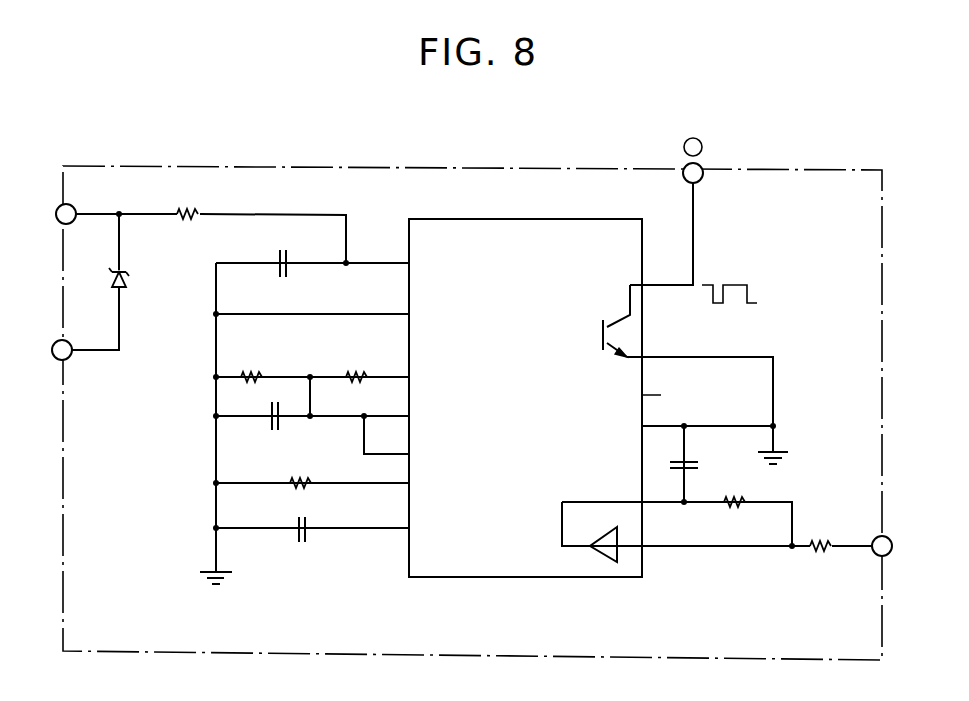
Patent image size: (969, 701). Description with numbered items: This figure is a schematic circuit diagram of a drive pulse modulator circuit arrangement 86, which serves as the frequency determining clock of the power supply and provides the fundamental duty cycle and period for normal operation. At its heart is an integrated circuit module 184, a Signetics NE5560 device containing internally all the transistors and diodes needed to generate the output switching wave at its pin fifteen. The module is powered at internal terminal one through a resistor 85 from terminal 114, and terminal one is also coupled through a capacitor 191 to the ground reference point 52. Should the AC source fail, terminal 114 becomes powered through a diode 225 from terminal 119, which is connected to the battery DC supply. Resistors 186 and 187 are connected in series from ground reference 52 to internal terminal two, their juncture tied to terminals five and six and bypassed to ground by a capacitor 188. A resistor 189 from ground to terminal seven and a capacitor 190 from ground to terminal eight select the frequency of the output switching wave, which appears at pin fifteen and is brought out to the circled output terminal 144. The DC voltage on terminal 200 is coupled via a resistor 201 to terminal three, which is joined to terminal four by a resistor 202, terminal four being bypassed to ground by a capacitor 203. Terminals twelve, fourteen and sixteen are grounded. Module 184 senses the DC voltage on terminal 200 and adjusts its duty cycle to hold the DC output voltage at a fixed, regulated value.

The drive pulse modulator circuit arrangement 86 is at (600, 170).
The integrated circuit module 184 is at (508, 233).
The terminal 114 is at (58, 222).
The terminal 119 is at (52, 362).
The resistor 85 is at (188, 209).
The diode 225 is at (126, 281).
The capacitor 191 is at (280, 256).
The resistor 186 is at (252, 368).
The resistor 187 is at (357, 368).
The capacitor 188 is at (270, 427).
The resistor 189 is at (302, 474).
The capacitor 190 is at (310, 520).
The ground reference point 52 is at (234, 574).
The terminal C 144 is at (703, 169).
The capacitor 203 is at (690, 463).
The resistor 202 is at (737, 496).
The resistor 201 is at (822, 539).
The terminal 200 is at (889, 538).